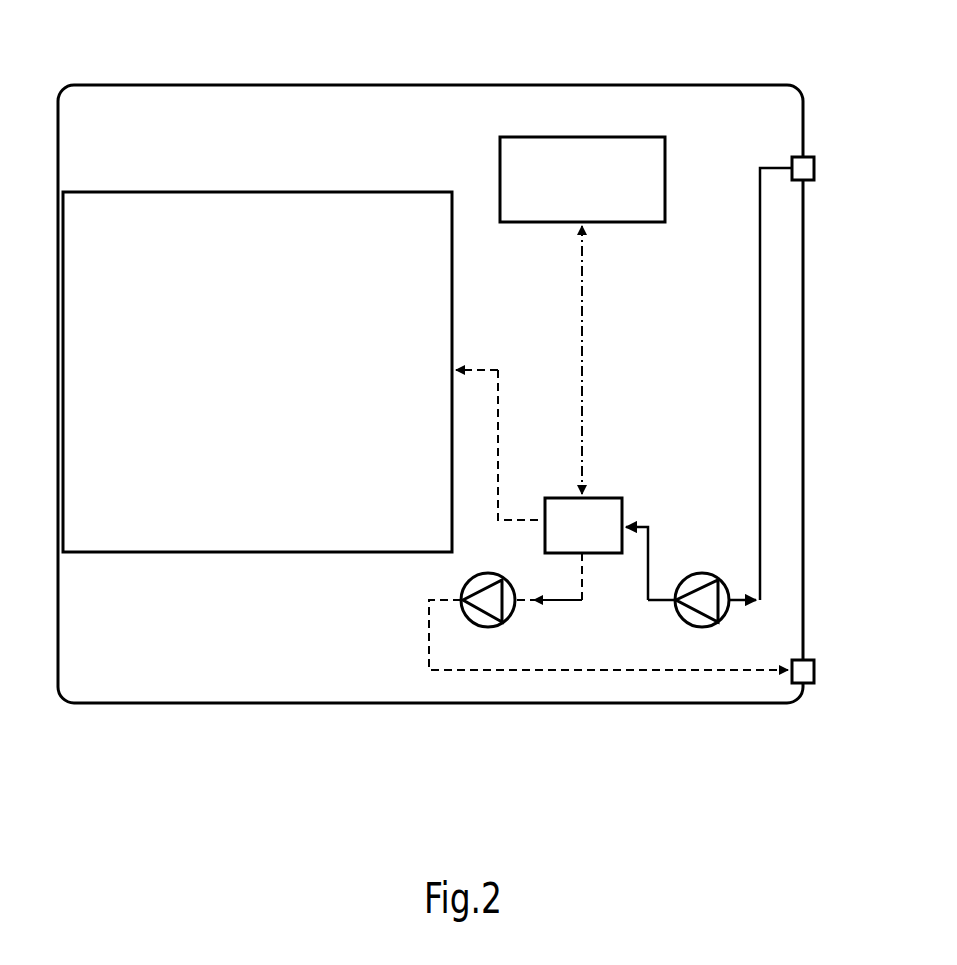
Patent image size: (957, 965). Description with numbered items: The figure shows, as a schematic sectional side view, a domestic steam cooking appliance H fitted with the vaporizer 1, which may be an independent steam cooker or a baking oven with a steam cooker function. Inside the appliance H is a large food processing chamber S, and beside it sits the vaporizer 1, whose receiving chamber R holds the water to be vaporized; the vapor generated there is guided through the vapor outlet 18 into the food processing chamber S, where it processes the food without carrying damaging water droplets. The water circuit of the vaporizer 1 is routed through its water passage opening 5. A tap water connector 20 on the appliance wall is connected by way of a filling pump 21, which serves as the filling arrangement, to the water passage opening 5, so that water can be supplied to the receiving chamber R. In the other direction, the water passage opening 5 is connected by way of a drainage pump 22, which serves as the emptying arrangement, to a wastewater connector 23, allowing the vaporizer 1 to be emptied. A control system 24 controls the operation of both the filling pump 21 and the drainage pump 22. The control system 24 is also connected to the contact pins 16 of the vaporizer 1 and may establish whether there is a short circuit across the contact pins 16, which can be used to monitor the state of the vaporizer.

The domestic steam cooking appliance H is at (611, 85).
The food processing chamber S is at (297, 191).
The control system 24 is at (564, 152).
The receiving chamber R is at (567, 516).
The vaporizer 1 is at (609, 498).
The contact pins 16 is at (588, 498).
The vapor outlet 18 is at (540, 538).
The water passage opening 5 is at (629, 522).
The drainage pump 22 is at (515, 610).
The filling pump 21 is at (728, 612).
The tap water connector 20 is at (815, 165).
The wastewater connector 23 is at (815, 672).